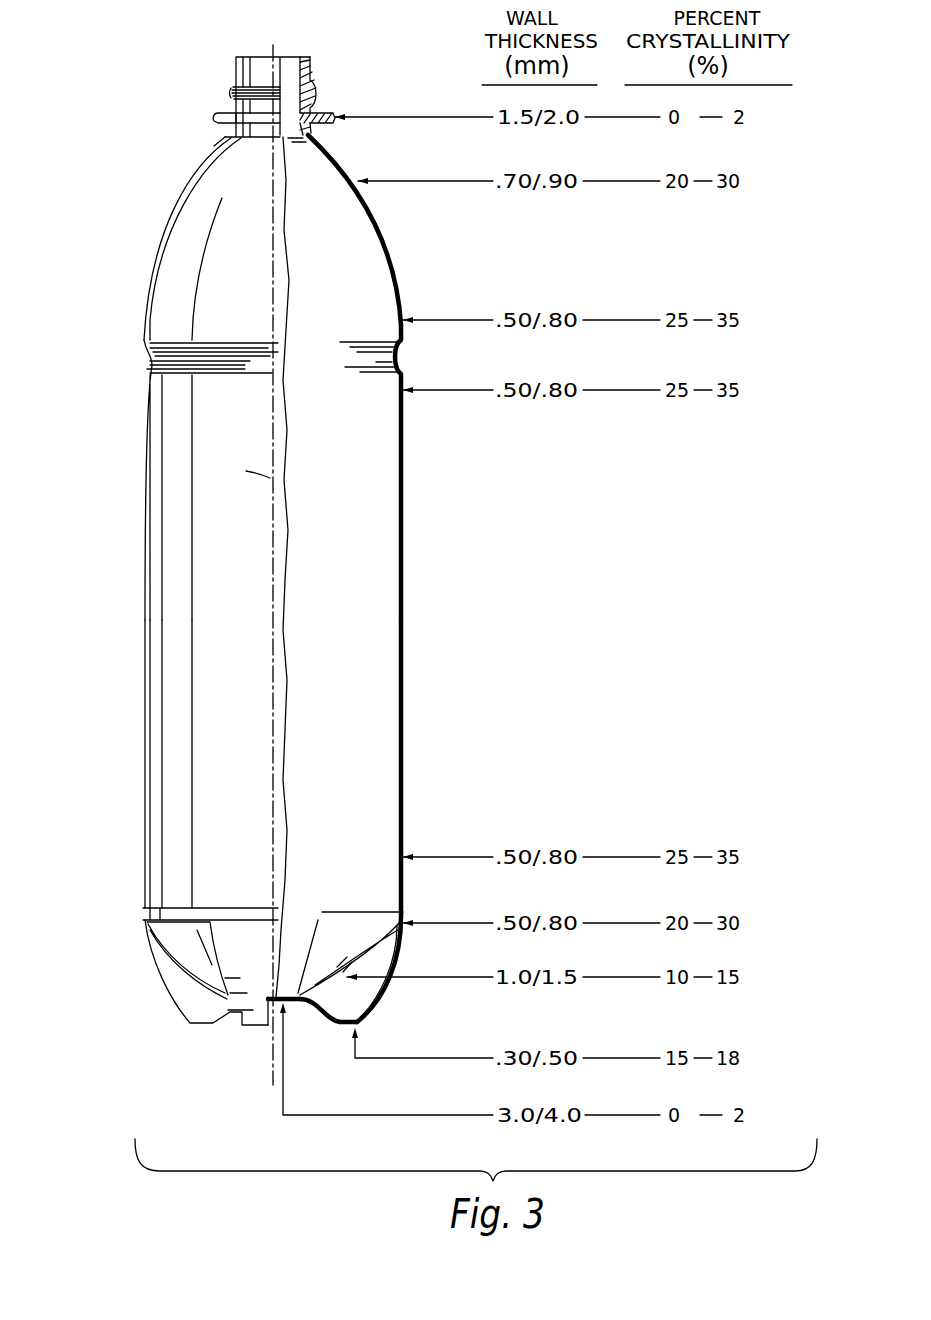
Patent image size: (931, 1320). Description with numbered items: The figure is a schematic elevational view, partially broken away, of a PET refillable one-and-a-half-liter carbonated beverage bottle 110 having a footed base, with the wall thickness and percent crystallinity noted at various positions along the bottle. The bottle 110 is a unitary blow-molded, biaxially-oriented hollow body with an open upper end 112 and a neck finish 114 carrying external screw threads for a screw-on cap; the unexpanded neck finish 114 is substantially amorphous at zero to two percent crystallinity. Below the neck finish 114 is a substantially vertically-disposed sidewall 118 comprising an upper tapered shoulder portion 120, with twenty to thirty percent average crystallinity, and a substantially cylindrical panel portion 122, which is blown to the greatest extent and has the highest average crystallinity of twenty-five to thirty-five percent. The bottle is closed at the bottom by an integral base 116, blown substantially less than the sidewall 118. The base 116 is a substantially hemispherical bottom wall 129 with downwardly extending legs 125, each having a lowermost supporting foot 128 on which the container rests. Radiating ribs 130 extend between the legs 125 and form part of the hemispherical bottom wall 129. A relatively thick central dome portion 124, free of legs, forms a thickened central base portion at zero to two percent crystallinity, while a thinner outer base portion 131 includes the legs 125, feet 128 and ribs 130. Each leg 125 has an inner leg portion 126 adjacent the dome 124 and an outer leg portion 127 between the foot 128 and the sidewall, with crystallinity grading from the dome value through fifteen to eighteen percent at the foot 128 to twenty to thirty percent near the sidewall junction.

The bottle 110 is at (445, 584).
The open upper end 112 is at (283, 57).
The neck finish 114 is at (312, 96).
The base 116 is at (147, 969).
The sidewall 118 is at (403, 516).
The upper tapered shoulder portion 120 is at (394, 246).
The cylindrical panel portion 122 is at (403, 681).
The central dome portion 124 is at (295, 1013).
The legs 125 is at (212, 1006).
The inner leg portion 126 is at (320, 1014).
The outer leg portion 127 is at (392, 986).
The foot 128 is at (360, 1028).
The hemispherical bottom wall 129 is at (197, 980).
The radiating ribs 130 is at (353, 950).
The outer base portion 131 is at (383, 949).